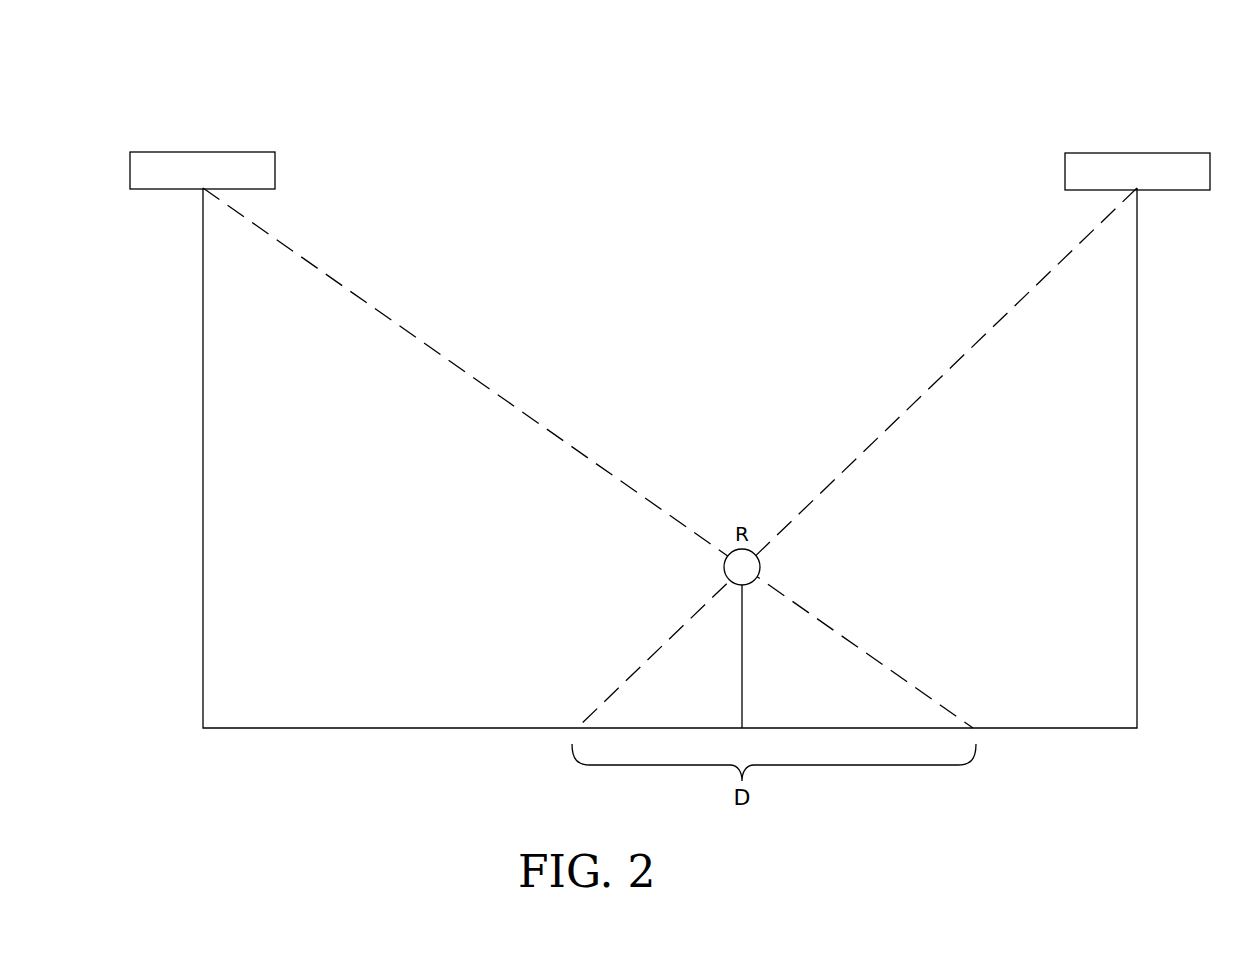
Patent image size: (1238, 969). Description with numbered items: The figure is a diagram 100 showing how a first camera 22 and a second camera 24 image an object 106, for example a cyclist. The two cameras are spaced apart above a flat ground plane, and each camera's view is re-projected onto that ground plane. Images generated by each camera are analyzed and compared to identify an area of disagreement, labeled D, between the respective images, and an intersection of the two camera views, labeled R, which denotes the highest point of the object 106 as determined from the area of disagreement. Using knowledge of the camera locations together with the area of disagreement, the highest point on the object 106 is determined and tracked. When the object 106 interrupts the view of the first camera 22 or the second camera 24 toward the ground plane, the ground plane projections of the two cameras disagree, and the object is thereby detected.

The diagram 100 is at (157, 101).
The first camera 22 is at (167, 152).
The second camera 24 is at (1118, 152).
The object 106 is at (742, 682).